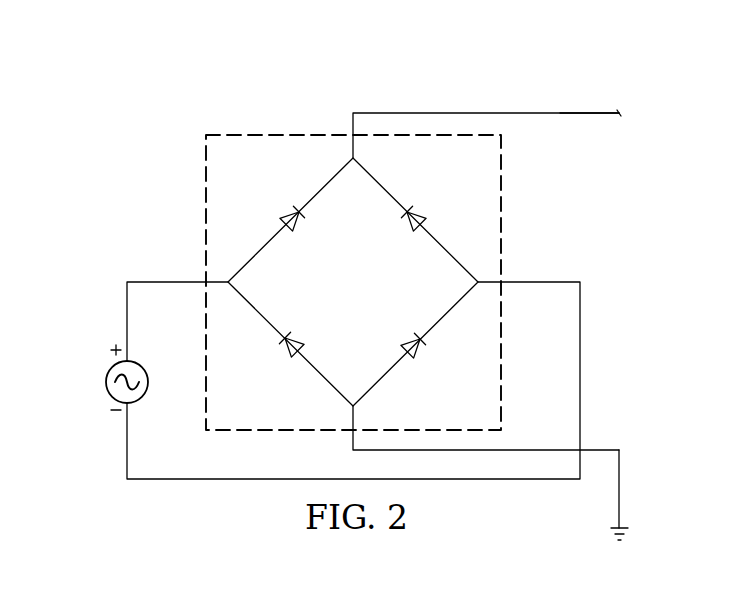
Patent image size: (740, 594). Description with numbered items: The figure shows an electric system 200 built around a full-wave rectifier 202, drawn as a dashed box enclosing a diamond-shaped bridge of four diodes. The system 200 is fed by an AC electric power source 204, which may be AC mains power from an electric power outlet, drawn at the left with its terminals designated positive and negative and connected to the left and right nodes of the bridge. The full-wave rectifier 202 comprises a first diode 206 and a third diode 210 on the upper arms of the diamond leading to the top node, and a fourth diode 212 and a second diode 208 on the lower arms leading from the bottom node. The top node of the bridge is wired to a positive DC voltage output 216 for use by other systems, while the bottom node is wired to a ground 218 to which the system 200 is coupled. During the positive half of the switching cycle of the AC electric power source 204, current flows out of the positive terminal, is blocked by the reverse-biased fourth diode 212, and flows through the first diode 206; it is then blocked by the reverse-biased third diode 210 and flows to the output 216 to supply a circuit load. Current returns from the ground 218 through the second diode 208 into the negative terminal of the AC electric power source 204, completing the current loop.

The electric system 200 is at (195, 65).
The full-wave rectifier 202 is at (282, 133).
The AC electric power source 204 is at (107, 382).
The first diode 206 is at (290, 212).
The second diode 208 is at (423, 350).
The third diode 210 is at (418, 212).
The fourth diode 212 is at (283, 350).
The positive DC voltage output 216 is at (487, 112).
The ground 218 is at (630, 533).